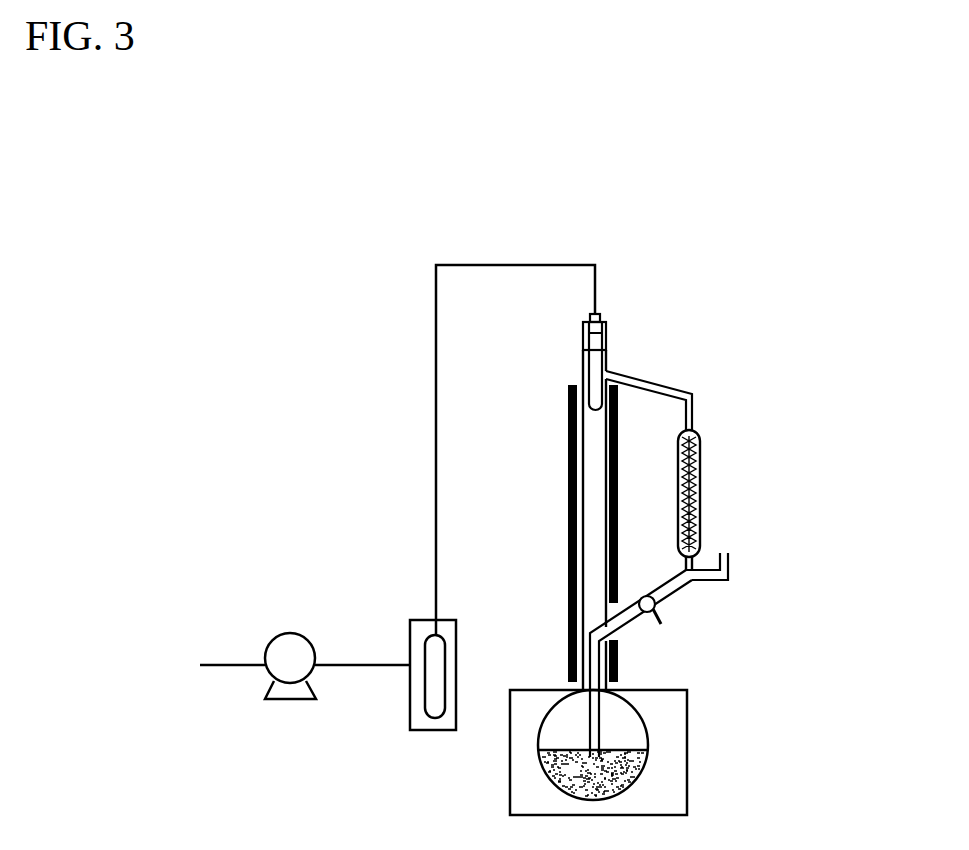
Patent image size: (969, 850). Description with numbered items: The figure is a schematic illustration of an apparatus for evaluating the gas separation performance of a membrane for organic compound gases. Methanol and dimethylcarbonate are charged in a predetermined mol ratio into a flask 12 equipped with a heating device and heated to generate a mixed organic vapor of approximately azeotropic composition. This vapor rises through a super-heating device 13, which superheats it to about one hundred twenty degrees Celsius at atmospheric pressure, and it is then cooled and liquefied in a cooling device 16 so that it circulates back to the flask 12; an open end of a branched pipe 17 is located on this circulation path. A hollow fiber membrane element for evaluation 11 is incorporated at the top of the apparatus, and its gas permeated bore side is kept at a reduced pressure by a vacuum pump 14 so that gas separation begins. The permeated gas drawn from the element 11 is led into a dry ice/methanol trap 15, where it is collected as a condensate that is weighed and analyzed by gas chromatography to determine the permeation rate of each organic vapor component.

The hollow fiber membrane element for evaluation 11 is at (597, 367).
The flask 12 is at (647, 728).
The super-heating device 13 is at (567, 515).
The vacuum pump 14 is at (290, 657).
The dry ice/methanol trap 15 is at (418, 645).
The cooling device 16 is at (705, 482).
The open end of a branched pipe 17 is at (745, 549).